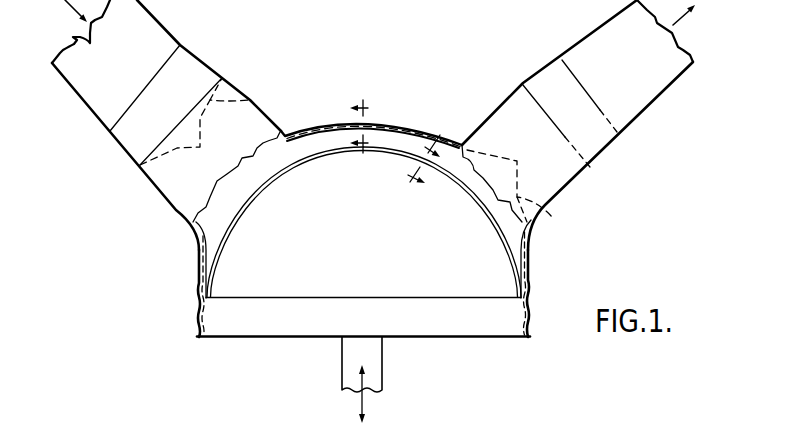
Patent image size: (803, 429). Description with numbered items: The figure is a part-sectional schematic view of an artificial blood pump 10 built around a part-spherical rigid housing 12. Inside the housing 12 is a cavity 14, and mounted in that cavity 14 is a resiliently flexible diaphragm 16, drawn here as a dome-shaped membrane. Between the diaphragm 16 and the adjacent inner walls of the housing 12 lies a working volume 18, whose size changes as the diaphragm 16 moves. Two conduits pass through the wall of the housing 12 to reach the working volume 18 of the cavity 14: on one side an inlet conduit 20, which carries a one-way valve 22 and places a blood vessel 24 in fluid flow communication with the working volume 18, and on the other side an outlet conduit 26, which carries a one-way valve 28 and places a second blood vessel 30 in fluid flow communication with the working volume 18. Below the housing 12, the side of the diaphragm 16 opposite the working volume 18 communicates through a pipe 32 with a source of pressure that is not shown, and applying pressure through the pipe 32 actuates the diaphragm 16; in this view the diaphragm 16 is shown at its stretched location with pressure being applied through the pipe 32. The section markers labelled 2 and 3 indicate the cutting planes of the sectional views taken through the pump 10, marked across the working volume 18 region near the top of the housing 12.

The artificial blood pump 10 is at (258, 46).
The part-spherical rigid housing 12 is at (527, 265).
The cavity 14 is at (232, 275).
The resiliently flexible diaphragm 16 is at (262, 193).
The working volume 18 is at (400, 140).
The inlet conduit 20 is at (131, 160).
The one-way valve 22 is at (250, 100).
The blood vessel 24 is at (88, 100).
The outlet conduit 26 is at (578, 180).
The one-way valve 28 is at (553, 218).
The blood vessel 30 is at (655, 98).
The pipe 32 is at (383, 372).
The section line 2- 2 is at (359, 129).
The section line 3- 3 is at (427, 155).